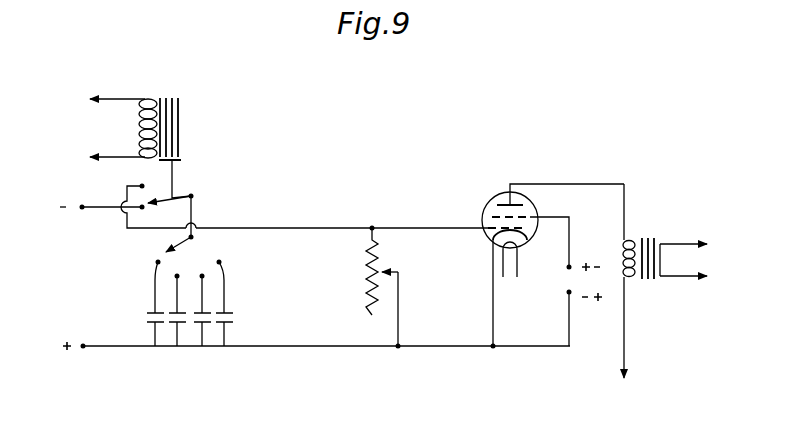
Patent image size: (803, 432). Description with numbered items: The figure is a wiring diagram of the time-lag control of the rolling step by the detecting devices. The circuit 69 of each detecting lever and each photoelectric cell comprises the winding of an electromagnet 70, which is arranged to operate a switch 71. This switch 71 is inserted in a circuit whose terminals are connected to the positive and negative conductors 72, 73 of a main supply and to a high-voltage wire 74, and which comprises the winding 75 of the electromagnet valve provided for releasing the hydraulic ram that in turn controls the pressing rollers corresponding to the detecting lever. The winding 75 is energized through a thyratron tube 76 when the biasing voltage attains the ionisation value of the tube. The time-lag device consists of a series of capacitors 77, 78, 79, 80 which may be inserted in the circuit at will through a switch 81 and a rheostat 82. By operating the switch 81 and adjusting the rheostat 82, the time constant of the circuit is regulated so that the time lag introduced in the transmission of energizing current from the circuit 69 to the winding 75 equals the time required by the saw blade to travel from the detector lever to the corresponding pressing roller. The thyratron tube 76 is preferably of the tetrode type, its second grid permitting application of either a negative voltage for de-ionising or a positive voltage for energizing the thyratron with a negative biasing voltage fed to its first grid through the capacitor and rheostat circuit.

The circuit 69 is at (117, 119).
The electromagnet 70 is at (175, 148).
The switch 71 is at (170, 211).
The positive conductor 72 is at (102, 197).
The negative conductor 73 is at (73, 335).
The high-voltage wire 74 is at (631, 339).
The winding of the electromagnet valve 75 is at (653, 231).
The thyratron tube 76 is at (551, 264).
The capacitor 77 is at (151, 315).
The capacitor 78 is at (175, 322).
The capacitor 79 is at (203, 322).
The capacitor 80 is at (228, 315).
The switch 81 is at (190, 247).
The rheostat 82 is at (371, 287).